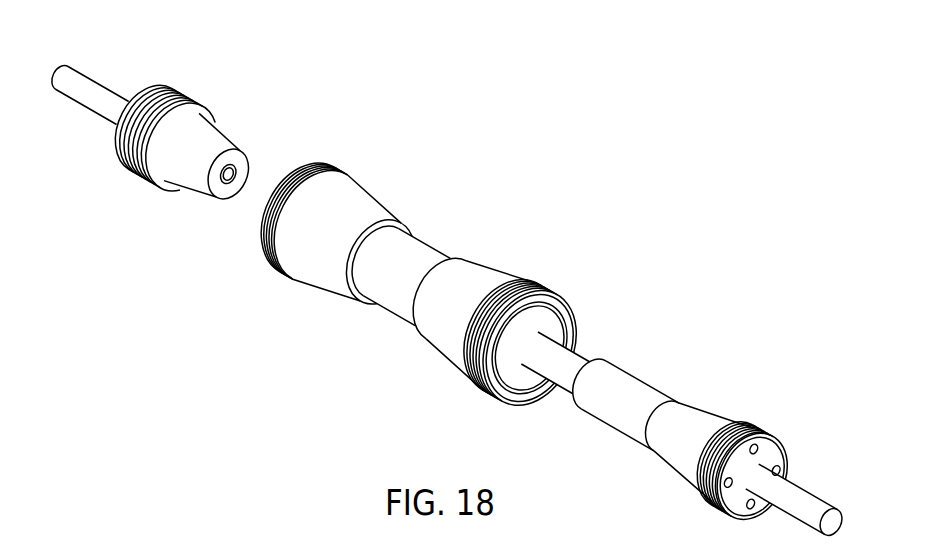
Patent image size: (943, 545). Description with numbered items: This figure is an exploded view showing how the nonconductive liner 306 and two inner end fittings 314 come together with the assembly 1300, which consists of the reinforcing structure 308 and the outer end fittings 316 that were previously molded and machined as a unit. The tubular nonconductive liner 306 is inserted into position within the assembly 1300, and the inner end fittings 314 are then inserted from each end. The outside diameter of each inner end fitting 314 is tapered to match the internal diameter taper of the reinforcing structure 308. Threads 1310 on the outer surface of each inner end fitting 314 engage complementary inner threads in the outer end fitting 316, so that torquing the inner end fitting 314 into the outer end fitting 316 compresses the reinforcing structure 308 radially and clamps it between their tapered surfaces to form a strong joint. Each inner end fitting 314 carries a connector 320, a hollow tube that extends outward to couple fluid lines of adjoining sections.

The connector 320 is at (102, 95).
The threads 1310 is at (173, 87).
The inner end fitting 314 is at (213, 140).
The nonconductive liner 306 is at (633, 390).
The assembly 1300 is at (418, 277).
The outer end fitting 316 is at (323, 277).
The reinforcing structure 308 is at (395, 300).